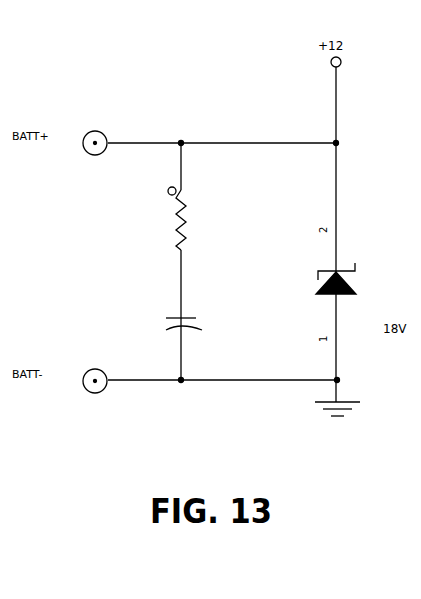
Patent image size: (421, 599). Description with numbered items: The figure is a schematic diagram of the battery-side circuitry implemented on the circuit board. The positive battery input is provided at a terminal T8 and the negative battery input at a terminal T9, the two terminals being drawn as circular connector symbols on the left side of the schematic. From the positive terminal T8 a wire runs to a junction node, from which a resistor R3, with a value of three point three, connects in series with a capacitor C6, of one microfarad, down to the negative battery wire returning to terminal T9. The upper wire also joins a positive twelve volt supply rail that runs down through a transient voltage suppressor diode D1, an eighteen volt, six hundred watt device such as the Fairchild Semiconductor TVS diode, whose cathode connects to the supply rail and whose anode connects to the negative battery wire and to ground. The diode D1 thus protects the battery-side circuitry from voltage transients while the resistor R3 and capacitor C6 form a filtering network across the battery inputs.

The BATT+ terminal T8 is at (91, 126).
The BATT- terminal T9 is at (91, 363).
The resistor R3 is at (196, 219).
The capacitor C6 is at (202, 336).
The transient voltage suppressor diode D1 is at (352, 276).